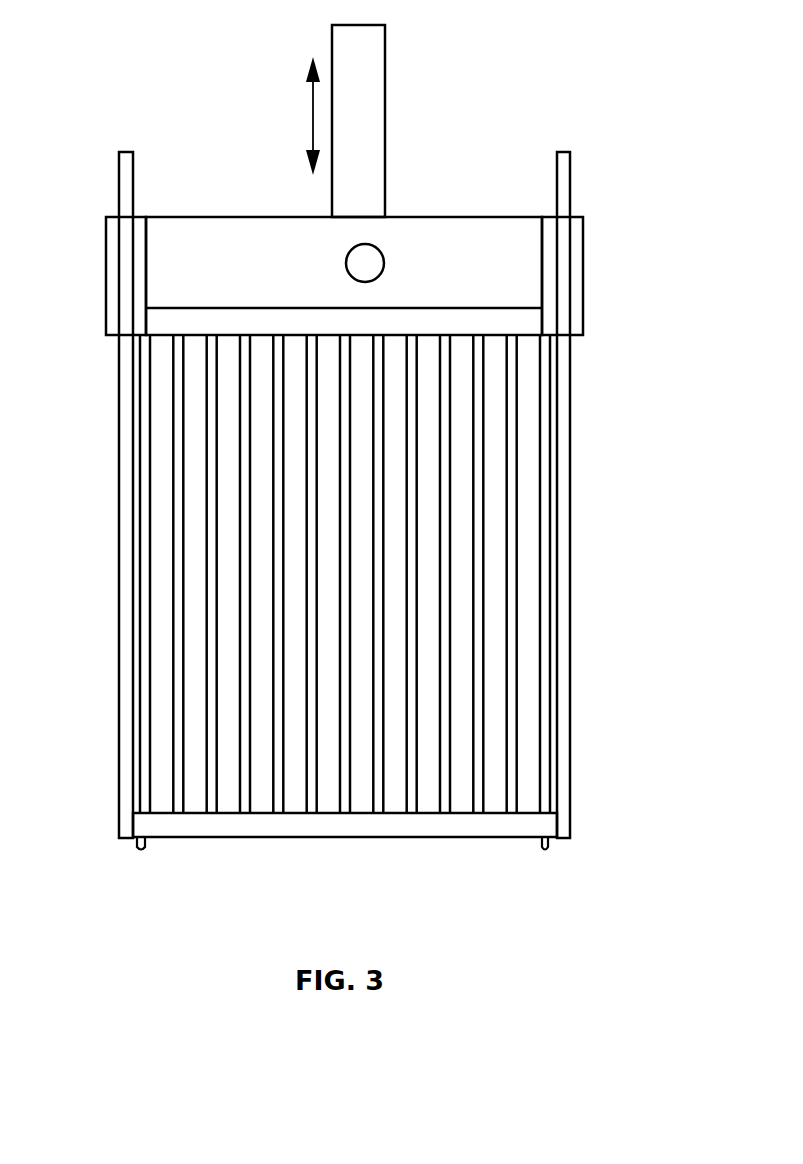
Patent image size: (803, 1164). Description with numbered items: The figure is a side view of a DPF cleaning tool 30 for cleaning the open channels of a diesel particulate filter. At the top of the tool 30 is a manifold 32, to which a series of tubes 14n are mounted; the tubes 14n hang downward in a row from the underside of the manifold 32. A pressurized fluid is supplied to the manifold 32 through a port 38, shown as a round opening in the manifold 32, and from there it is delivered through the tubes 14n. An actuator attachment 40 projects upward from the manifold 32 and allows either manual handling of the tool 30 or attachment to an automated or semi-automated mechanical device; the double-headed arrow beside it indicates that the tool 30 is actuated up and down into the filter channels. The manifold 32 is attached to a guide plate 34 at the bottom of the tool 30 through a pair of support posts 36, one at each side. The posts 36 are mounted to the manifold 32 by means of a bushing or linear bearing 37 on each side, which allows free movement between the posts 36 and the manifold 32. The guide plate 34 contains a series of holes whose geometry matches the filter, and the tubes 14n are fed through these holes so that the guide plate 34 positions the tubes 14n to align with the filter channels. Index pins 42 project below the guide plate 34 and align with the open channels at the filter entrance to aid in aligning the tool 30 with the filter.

The DPF cleaning tool 30 is at (631, 144).
The manifold 32 is at (195, 335).
The guide plate 34 is at (473, 838).
The support posts 36 is at (119, 613).
The bushing or linear bearing 37 is at (107, 262).
The port 38 is at (383, 250).
The actuator attachment 40 is at (387, 110).
The index pins 42 is at (137, 845).
The tubes 14n is at (402, 855).